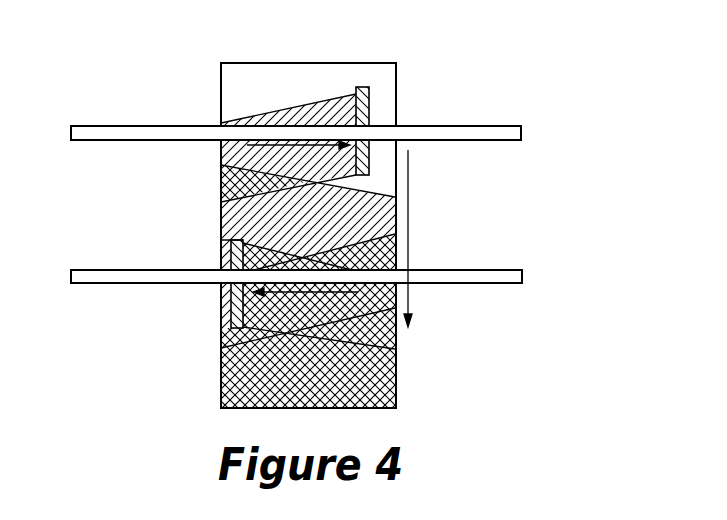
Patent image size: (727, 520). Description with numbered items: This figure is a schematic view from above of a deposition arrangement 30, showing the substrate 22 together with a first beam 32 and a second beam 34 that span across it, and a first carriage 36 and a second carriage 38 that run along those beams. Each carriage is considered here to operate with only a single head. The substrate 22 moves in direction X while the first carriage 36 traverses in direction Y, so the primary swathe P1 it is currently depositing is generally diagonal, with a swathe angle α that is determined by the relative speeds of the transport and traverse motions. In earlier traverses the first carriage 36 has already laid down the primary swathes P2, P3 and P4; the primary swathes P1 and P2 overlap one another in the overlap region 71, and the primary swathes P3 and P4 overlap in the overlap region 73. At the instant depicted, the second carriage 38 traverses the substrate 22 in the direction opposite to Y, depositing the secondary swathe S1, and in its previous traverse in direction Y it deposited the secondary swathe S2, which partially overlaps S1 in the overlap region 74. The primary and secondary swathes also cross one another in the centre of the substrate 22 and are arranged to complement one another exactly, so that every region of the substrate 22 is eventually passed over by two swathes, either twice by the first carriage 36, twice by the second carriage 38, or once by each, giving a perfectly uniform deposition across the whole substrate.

The substrate 22 is at (243, 63).
The deposition arrangement 30 is at (363, 210).
The first beam 32 is at (93, 126).
The second beam 34 is at (93, 270).
The first carriage 36 is at (367, 87).
The second carriage 38 is at (221, 312).
The overlap region 71 is at (221, 187).
The overlap region 73 is at (221, 343).
The overlap region 74 is at (382, 332).
The primary swathe P1 is at (221, 157).
The primary swathe P2 is at (380, 210).
The primary swathe P3 is at (384, 290).
The primary swathe P4 is at (221, 373).
The secondary swathe S1 is at (221, 297).
The secondary swathe S2 is at (380, 383).